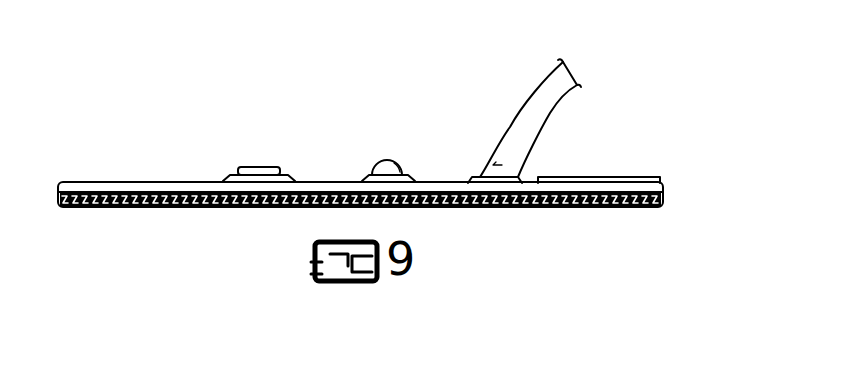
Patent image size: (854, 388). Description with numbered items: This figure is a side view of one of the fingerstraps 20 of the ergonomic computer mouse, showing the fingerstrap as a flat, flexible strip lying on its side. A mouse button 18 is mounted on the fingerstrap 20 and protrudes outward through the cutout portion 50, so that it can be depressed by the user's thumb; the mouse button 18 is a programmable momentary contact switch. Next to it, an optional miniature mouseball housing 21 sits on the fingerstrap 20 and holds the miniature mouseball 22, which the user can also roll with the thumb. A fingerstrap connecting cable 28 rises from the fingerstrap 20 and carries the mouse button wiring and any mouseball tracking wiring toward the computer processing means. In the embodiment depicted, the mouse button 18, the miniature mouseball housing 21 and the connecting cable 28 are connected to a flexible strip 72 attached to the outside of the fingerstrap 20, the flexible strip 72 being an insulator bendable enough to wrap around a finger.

The fingerstrap 20 is at (111, 163).
The flexible strip 72 is at (80, 187).
The mouse button 18 is at (257, 167).
The cutout portion 50 is at (295, 181).
The miniature mouseball housing 21 is at (362, 179).
The miniature mouseball 22 is at (397, 166).
The fingerstrap connecting cable 28 is at (518, 131).